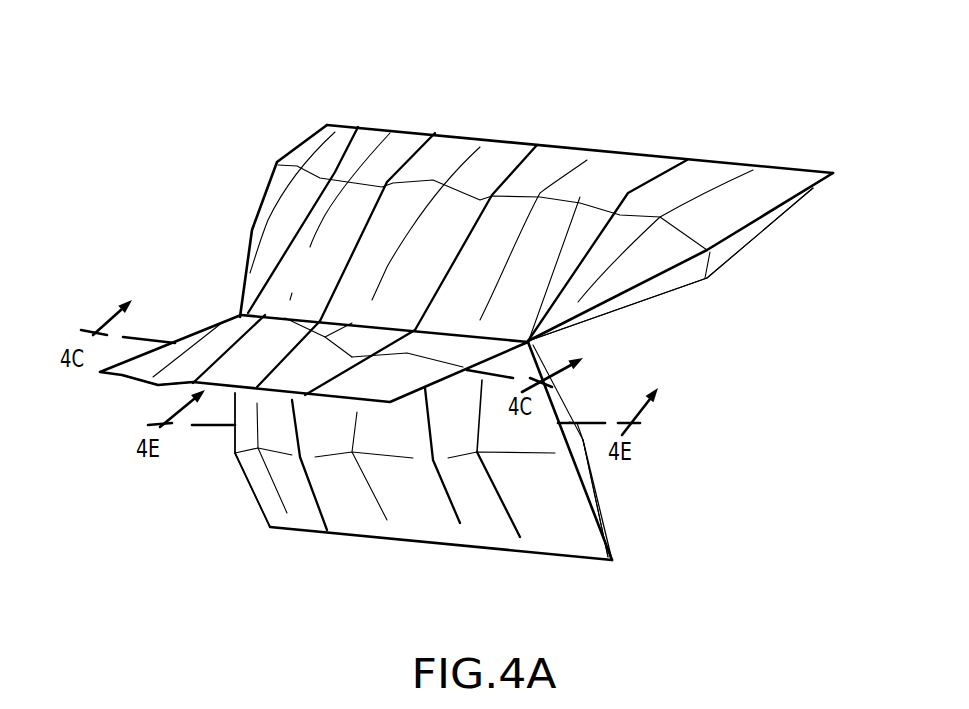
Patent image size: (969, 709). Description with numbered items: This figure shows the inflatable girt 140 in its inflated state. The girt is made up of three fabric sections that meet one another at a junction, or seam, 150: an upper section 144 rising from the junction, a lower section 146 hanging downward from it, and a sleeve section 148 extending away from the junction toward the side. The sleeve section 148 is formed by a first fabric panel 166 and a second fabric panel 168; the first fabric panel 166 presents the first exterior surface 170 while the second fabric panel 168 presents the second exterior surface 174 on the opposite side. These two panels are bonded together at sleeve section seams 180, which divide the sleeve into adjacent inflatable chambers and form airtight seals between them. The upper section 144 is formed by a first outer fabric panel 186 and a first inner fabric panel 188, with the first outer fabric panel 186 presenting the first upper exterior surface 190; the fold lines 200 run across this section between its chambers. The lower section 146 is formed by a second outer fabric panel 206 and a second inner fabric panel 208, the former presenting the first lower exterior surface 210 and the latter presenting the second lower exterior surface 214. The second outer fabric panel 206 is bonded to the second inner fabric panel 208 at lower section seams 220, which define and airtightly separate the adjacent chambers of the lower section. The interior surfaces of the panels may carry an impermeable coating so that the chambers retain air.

The inflatable girt 140 is at (192, 92).
The upper section 144 is at (411, 113).
The lower section 146 is at (255, 529).
The sleeve section 148 is at (187, 319).
The junction 150 is at (267, 316).
The first fabric panel 166 is at (223, 328).
The second fabric panel 168 is at (137, 377).
The first exterior surface 170 is at (305, 370).
The second exterior surface 174 is at (140, 382).
The sleeve section seams 180 is at (300, 330).
The first outer fabric panel 186 is at (758, 197).
The first inner fabric panel 188 is at (663, 297).
The first upper exterior surface 190 is at (522, 260).
The fold line 200 is at (340, 153).
The second outer fabric panel 206 is at (257, 477).
The second inner fabric panel 208 is at (587, 488).
The first lower exterior surface 210 is at (386, 503).
The second lower exterior surface 214 is at (602, 512).
The lower section seams 220 is at (318, 498).